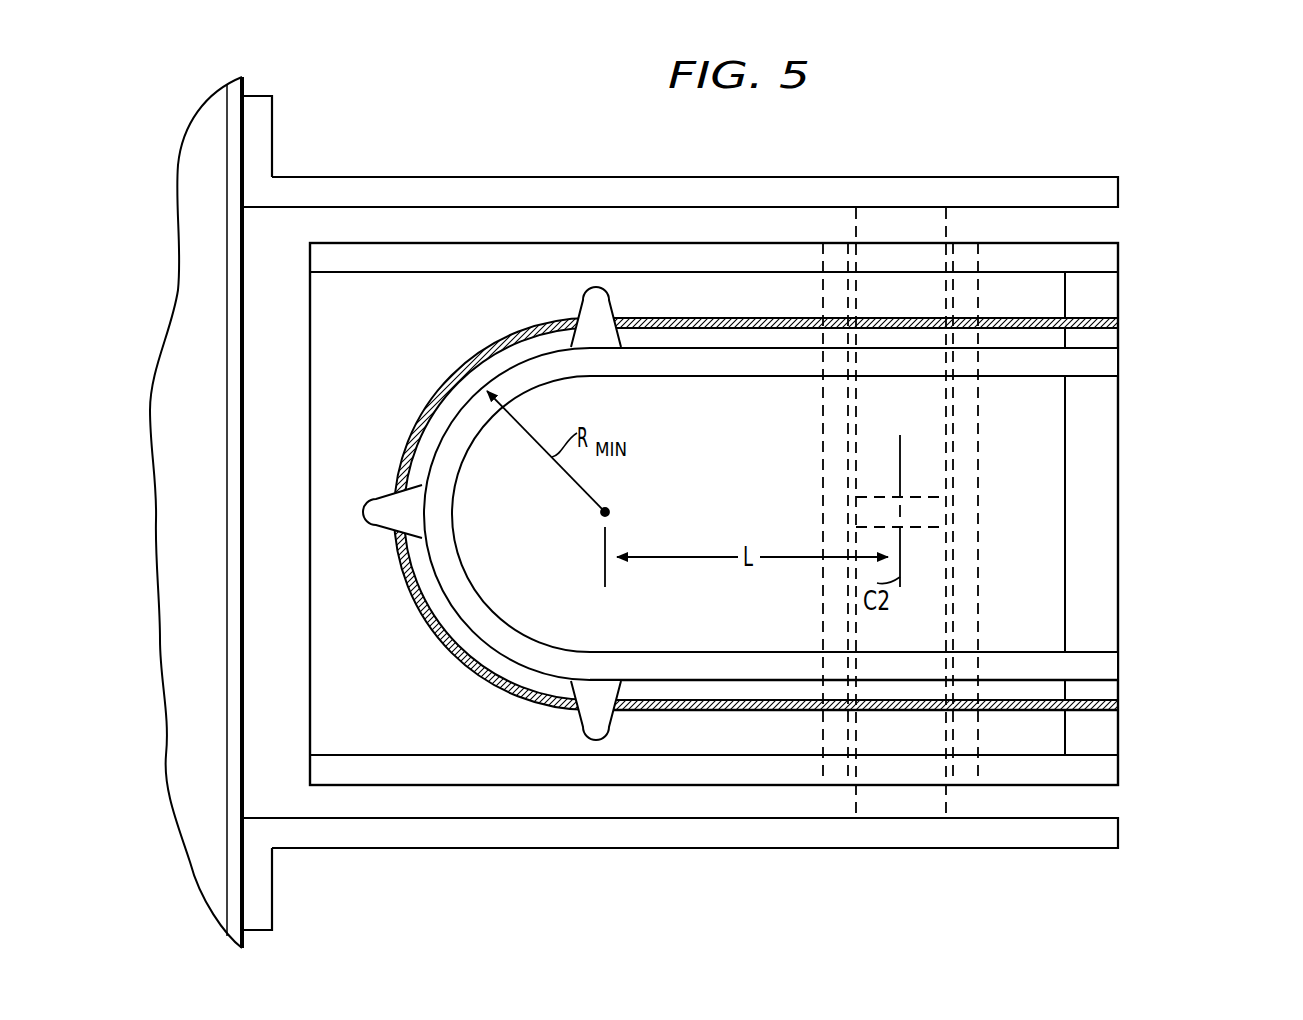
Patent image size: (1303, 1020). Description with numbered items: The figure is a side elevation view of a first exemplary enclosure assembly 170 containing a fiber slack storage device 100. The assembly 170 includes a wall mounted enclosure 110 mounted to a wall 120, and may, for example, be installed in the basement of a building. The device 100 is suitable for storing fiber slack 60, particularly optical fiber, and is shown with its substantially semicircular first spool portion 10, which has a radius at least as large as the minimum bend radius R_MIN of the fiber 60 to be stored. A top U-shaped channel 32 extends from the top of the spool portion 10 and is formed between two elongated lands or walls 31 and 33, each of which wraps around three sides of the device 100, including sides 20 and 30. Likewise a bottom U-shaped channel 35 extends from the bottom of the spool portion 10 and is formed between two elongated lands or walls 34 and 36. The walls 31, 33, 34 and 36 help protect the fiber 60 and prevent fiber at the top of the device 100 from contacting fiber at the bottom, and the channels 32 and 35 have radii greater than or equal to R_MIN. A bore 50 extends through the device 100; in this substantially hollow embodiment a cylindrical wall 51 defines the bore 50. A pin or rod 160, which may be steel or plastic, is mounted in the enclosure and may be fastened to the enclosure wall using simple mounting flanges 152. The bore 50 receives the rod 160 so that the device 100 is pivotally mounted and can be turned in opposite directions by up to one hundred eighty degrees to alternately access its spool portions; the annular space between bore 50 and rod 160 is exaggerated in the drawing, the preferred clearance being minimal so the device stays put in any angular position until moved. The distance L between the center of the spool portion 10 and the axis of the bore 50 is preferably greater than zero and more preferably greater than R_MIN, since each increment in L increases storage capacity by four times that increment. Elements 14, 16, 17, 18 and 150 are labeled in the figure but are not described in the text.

The device 100 is at (1135, 577).
The first spool portion 10 is at (397, 363).
The spacer fins 14 is at (578, 303).
The outer tube 16 is at (791, 745).
The housing wall 17 is at (505, 271).
The outer tube wall 18 is at (655, 333).
The side 20 is at (713, 466).
The side 30 is at (1066, 503).
The land or wall 31 is at (1115, 343).
The top U-shaped channel 32 is at (1113, 333).
The land or wall 33 is at (1105, 275).
The land or wall 34 is at (1110, 682).
The bottom U-shaped channel 35 is at (1112, 730).
The land or wall 36 is at (1095, 752).
The bore 50 is at (952, 238).
The cylindrical wall 51 is at (978, 527).
The fiber slack 60 is at (1113, 316).
The wall mounted enclosure 110 is at (245, 433).
The wall 120 is at (243, 305).
The mounting flange 150 is at (759, 176).
The mounting flanges 152 is at (273, 141).
The pin or rod 160 is at (855, 222).
The enclosure assembly 170 is at (488, 897).